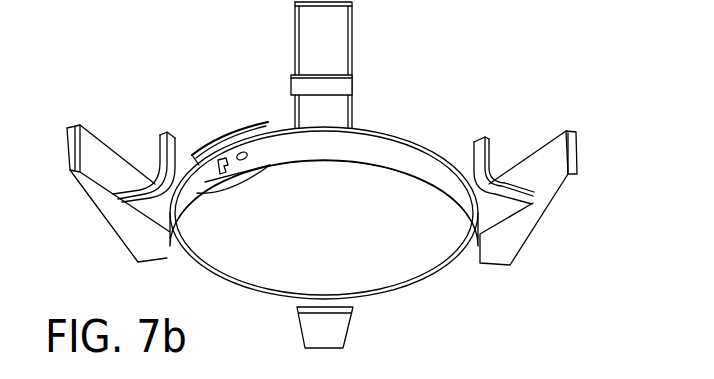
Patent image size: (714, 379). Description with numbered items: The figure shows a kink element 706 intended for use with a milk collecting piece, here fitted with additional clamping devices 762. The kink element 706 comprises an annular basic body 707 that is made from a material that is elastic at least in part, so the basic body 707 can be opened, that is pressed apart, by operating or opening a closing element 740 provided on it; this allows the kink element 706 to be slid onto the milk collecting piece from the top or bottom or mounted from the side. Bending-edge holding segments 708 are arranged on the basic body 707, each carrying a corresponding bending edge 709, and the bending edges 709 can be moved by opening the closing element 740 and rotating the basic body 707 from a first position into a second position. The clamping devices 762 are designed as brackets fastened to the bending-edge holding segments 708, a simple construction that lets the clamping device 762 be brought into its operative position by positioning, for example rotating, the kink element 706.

The kink element 706 is at (352, 175).
The basic body 707 is at (403, 137).
The bending-edge holding segment 708 is at (558, 198).
The bending edge 709 is at (580, 148).
The closing element 740 is at (217, 140).
The clamping device 762 is at (290, 88).